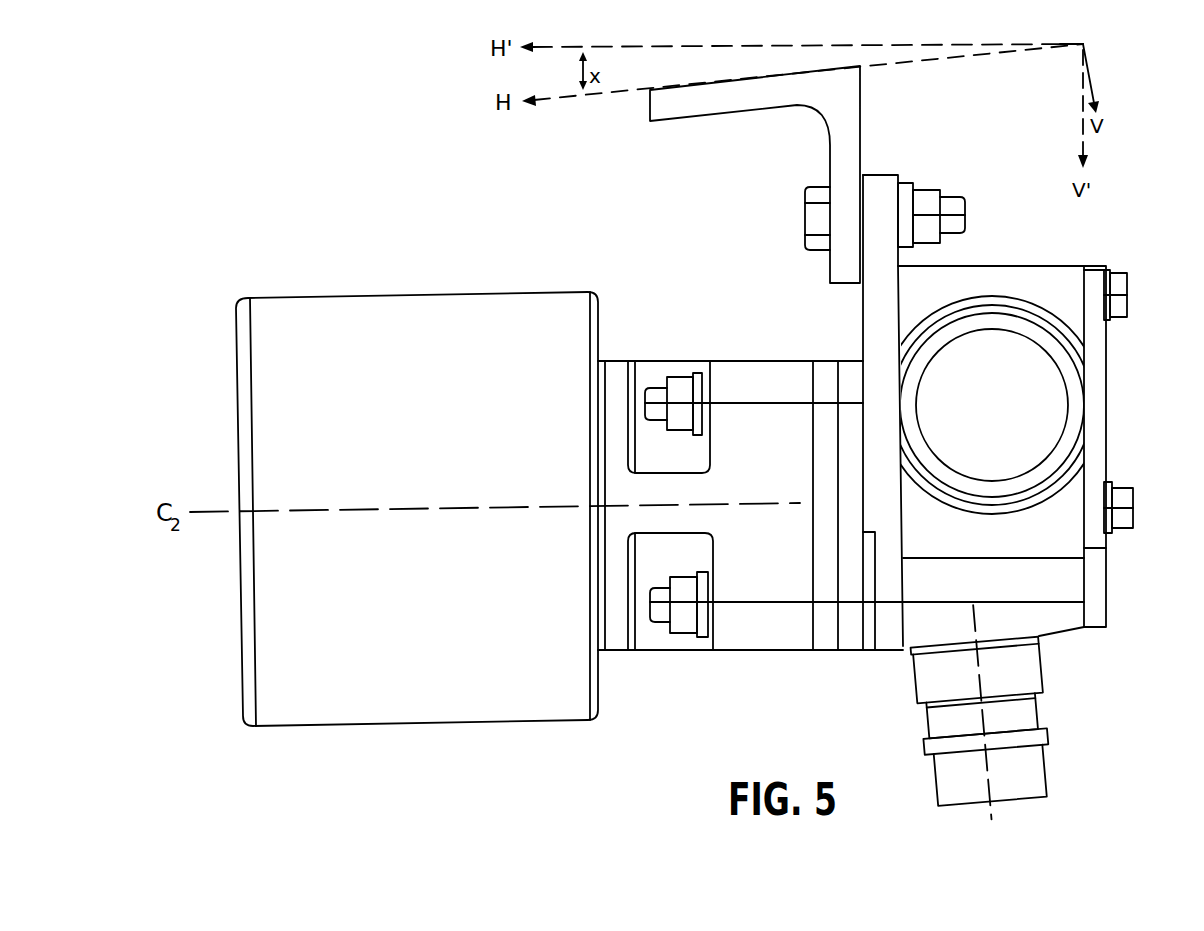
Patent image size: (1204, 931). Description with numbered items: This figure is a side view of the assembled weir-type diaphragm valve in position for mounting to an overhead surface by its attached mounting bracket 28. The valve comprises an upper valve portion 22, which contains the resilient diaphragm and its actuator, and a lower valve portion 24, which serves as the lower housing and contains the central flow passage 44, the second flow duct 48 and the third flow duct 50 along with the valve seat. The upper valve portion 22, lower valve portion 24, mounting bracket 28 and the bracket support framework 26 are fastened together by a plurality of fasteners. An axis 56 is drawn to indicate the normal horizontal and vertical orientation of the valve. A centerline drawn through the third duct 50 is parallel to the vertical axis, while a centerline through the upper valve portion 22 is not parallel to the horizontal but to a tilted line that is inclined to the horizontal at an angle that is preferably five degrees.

The upper valve portion 22 is at (424, 312).
The lower valve portion 24 is at (1067, 535).
The bracket support framework 26 is at (878, 195).
The mounting bracket 28 is at (843, 140).
The central flow passage 44 is at (1023, 400).
The second flow duct 48 is at (1070, 428).
The third flow duct 50 is at (1028, 772).
The axis 56 is at (1085, 44).